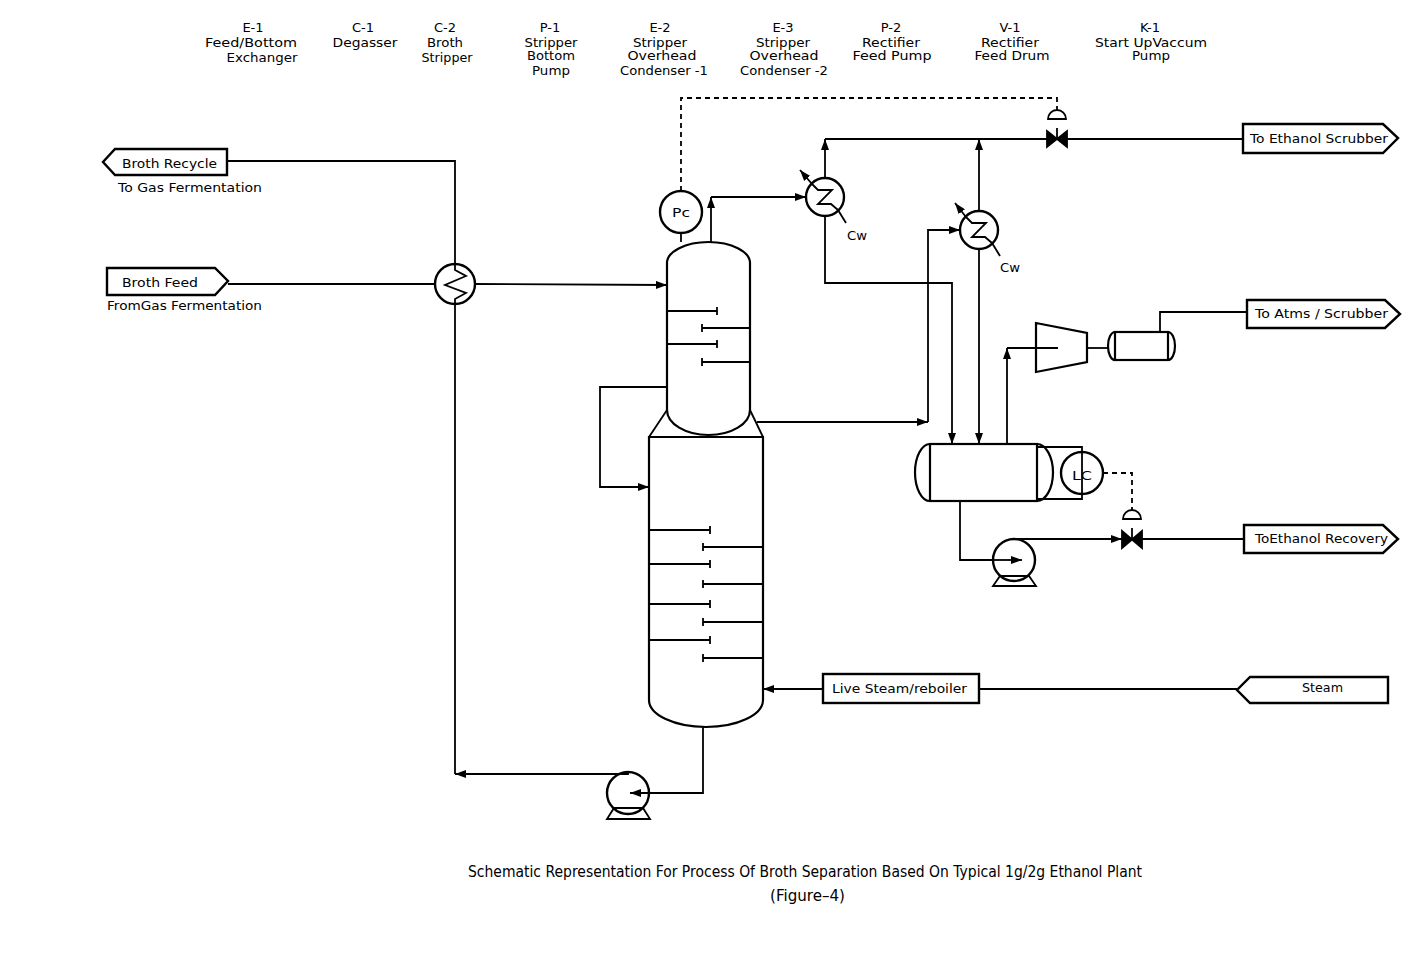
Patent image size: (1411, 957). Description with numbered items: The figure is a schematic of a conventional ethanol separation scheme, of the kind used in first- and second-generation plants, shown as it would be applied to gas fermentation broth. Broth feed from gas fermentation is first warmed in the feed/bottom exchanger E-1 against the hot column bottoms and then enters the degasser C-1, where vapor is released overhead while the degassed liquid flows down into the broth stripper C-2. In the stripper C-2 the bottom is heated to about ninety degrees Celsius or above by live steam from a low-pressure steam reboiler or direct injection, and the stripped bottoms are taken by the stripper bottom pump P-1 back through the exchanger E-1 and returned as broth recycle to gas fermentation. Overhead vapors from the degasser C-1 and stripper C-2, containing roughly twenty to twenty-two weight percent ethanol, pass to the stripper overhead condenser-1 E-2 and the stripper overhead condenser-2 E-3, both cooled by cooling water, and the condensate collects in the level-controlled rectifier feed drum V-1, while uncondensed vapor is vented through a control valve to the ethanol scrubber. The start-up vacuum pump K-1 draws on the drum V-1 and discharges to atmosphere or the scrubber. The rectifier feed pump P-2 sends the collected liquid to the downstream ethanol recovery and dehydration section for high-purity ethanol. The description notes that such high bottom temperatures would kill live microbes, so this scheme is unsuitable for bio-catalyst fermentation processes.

The feed/bottom exchanger E-1 is at (420, 309).
The degasser C-1 is at (671, 338).
The broth stripper C-2 is at (671, 568).
The stripper bottom pump P-1 is at (637, 813).
The stripper overhead condenser-1 E-2 is at (868, 188).
The stripper overhead condenser-2 E-3 is at (1025, 224).
The rectifier feed pump P-2 is at (1015, 589).
The rectifier feed drum V-1 is at (998, 472).
The start up vacuum pump K-1 is at (1110, 371).